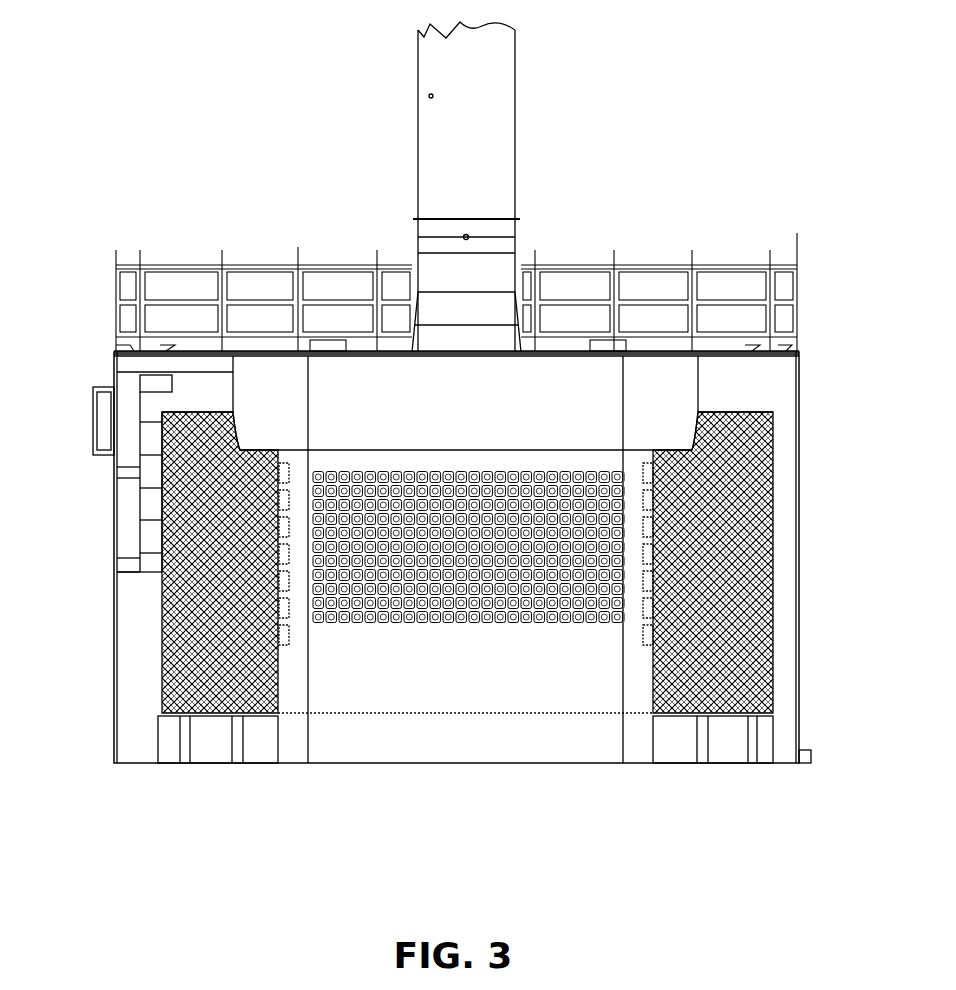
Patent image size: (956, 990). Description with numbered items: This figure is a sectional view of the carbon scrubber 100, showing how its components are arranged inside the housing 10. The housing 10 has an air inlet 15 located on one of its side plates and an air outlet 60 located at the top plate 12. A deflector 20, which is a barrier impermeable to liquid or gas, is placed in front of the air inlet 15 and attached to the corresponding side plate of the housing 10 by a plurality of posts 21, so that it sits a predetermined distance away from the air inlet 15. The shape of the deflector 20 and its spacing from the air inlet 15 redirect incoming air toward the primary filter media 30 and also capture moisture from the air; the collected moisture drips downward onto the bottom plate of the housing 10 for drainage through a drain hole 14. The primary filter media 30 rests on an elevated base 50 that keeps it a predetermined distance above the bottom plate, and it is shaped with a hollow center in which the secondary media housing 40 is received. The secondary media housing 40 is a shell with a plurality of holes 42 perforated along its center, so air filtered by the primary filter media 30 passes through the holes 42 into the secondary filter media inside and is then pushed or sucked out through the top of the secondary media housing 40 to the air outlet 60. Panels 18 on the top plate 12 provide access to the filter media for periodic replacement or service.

The housing 10 is at (116, 720).
The top plate 12 is at (153, 347).
The drain hole 14 is at (811, 752).
The air inlet 15 is at (96, 406).
The panels 18 is at (330, 336).
The deflector 20 is at (140, 503).
The posts 21 is at (127, 573).
The primary filter media 30 is at (742, 583).
The secondary media housing 40 is at (538, 683).
The holes 42 is at (418, 570).
The elevated base 50 is at (740, 717).
The air outlet 60 is at (473, 287).
The carbon scrubber 100 is at (270, 830).